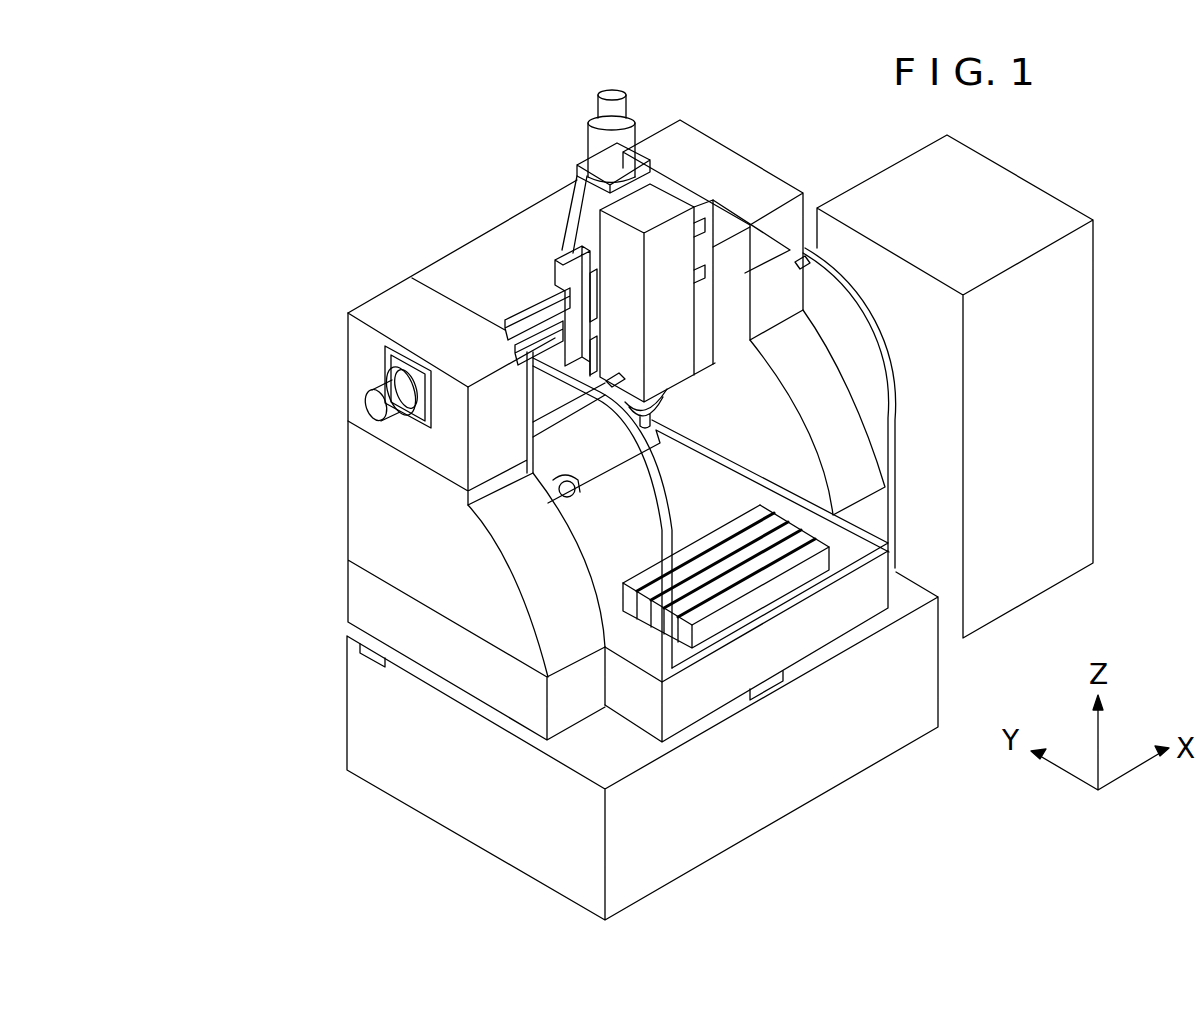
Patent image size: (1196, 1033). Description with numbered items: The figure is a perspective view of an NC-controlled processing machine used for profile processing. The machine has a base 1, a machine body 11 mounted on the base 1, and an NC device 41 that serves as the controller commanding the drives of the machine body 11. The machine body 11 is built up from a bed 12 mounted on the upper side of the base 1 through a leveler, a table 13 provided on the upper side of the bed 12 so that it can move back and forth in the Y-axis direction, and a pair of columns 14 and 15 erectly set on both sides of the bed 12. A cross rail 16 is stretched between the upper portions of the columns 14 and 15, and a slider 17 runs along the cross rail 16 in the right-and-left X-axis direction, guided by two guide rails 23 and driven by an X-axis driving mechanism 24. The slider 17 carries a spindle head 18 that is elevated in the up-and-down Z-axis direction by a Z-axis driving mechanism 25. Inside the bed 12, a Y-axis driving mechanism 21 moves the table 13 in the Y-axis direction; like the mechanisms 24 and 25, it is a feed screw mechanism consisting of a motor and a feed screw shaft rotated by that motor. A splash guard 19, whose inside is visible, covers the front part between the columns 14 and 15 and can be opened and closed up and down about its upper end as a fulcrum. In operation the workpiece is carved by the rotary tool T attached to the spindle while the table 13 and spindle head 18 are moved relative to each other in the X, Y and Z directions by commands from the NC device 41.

The base 1 is at (834, 770).
The machine body 11 is at (796, 170).
The bed 12 is at (815, 632).
The table 13 is at (703, 491).
The column 14 is at (362, 481).
The column 15 is at (815, 347).
The cross rail 16 is at (455, 265).
The slider 17 is at (562, 260).
The spindle head 18 is at (660, 197).
The splash guard 19 is at (867, 357).
The Y-axis driving mechanism 21 is at (562, 478).
The guide rail 23 is at (553, 350).
The X-axis driving mechanism 24 is at (367, 405).
The Z-axis driving mechanism 25 is at (610, 97).
The NC device 41 is at (1043, 188).
The rotary tool T is at (668, 421).